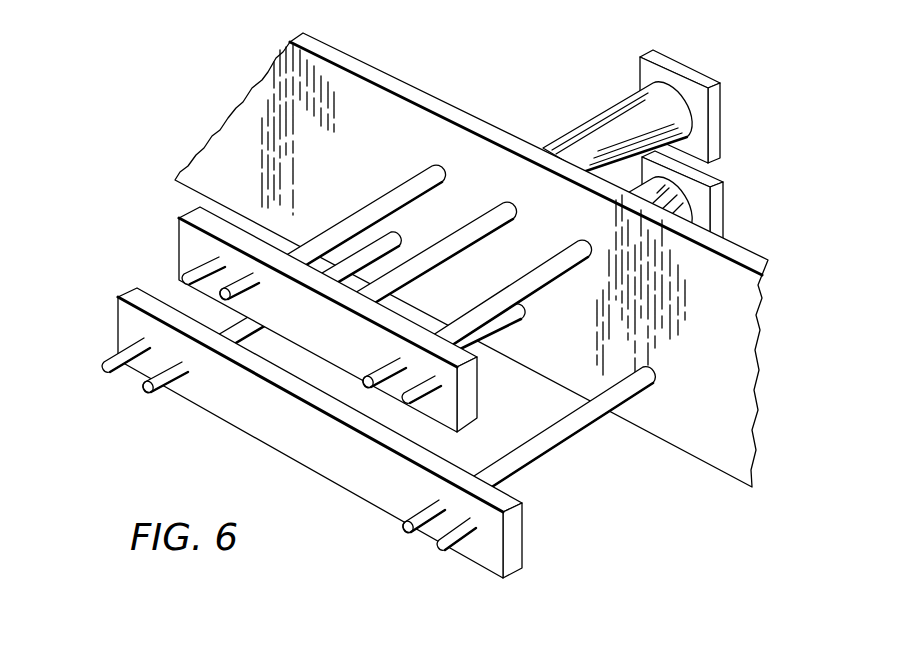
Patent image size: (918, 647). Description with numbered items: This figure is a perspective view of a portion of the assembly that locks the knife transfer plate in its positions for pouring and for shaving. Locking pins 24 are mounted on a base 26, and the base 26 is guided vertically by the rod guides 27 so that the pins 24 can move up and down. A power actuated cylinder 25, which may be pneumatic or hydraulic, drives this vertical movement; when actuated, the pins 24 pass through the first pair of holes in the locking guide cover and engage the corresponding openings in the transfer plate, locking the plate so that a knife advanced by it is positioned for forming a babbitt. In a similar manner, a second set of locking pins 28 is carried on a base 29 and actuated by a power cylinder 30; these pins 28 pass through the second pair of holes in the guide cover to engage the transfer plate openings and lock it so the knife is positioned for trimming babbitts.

The locking pins 24 is at (186, 272).
The power actuated cylinder 25 is at (632, 112).
The base 26 is at (180, 219).
The rod guides 27 is at (372, 216).
The locking pins 28 is at (462, 547).
The base 29 is at (516, 550).
The power cylinder 30 is at (727, 204).